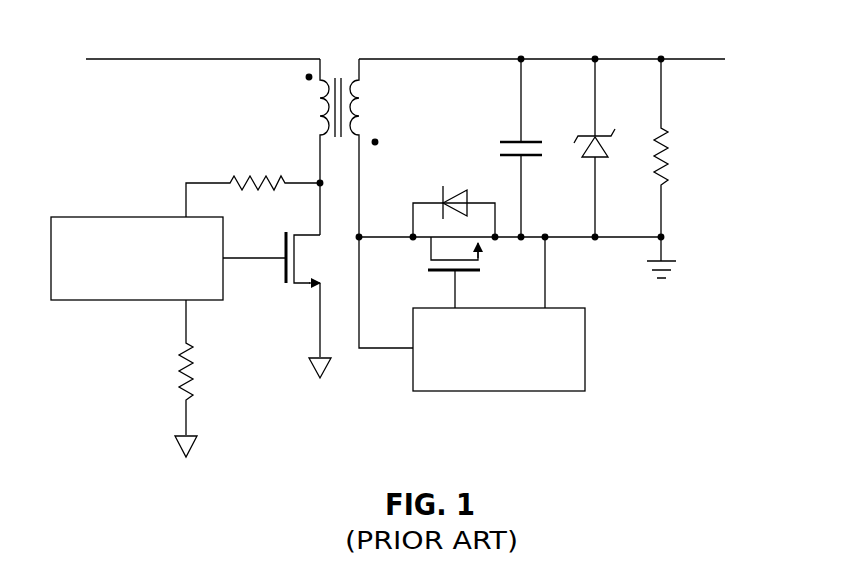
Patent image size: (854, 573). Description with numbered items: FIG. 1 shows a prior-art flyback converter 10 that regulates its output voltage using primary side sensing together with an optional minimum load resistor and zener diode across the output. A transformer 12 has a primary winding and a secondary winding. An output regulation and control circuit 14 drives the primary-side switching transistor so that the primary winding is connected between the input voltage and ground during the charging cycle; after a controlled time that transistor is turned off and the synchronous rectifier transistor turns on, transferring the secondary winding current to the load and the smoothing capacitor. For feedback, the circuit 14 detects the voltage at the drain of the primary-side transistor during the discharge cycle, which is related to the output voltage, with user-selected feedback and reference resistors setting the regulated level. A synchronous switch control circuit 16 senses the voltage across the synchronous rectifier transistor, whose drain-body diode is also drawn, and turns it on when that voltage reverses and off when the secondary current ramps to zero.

The flyback converter 10 is at (174, 132).
The transformer 12 is at (330, 46).
The output regulation and control circuit 14 is at (93, 216).
The synchronous switch control circuit 16 is at (588, 358).